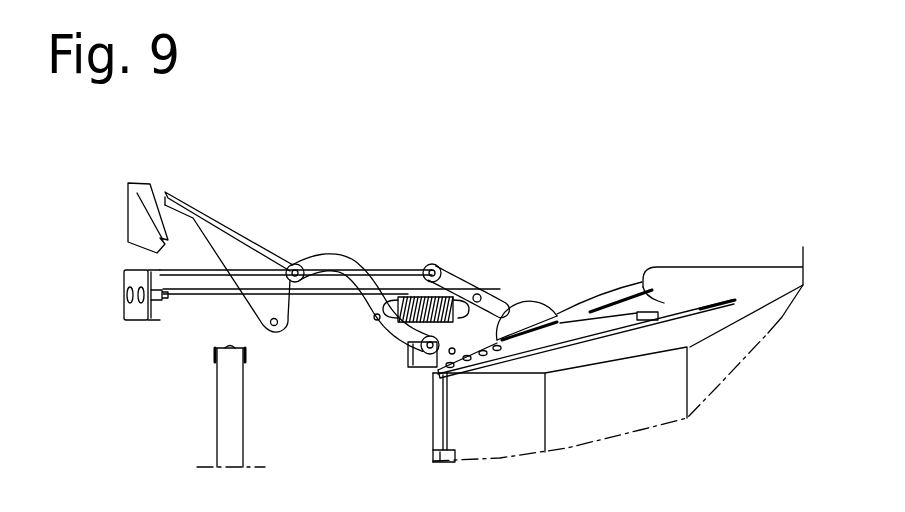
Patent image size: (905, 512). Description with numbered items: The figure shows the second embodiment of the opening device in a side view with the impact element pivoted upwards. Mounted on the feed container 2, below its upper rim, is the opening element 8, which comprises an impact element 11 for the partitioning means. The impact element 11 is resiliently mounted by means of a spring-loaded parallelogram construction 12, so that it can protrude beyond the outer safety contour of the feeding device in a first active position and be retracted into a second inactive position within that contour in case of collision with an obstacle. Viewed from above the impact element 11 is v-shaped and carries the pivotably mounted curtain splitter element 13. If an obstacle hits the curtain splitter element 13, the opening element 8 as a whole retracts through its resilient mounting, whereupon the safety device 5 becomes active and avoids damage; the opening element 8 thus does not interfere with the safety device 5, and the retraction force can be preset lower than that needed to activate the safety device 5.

The feed container 2 is at (763, 275).
The safety device 5 is at (228, 402).
The opening element 8 is at (338, 228).
The impact element 11 is at (135, 308).
The spring-loaded parallelogram construction 12 is at (345, 315).
The curtain splitter element 13 is at (138, 230).